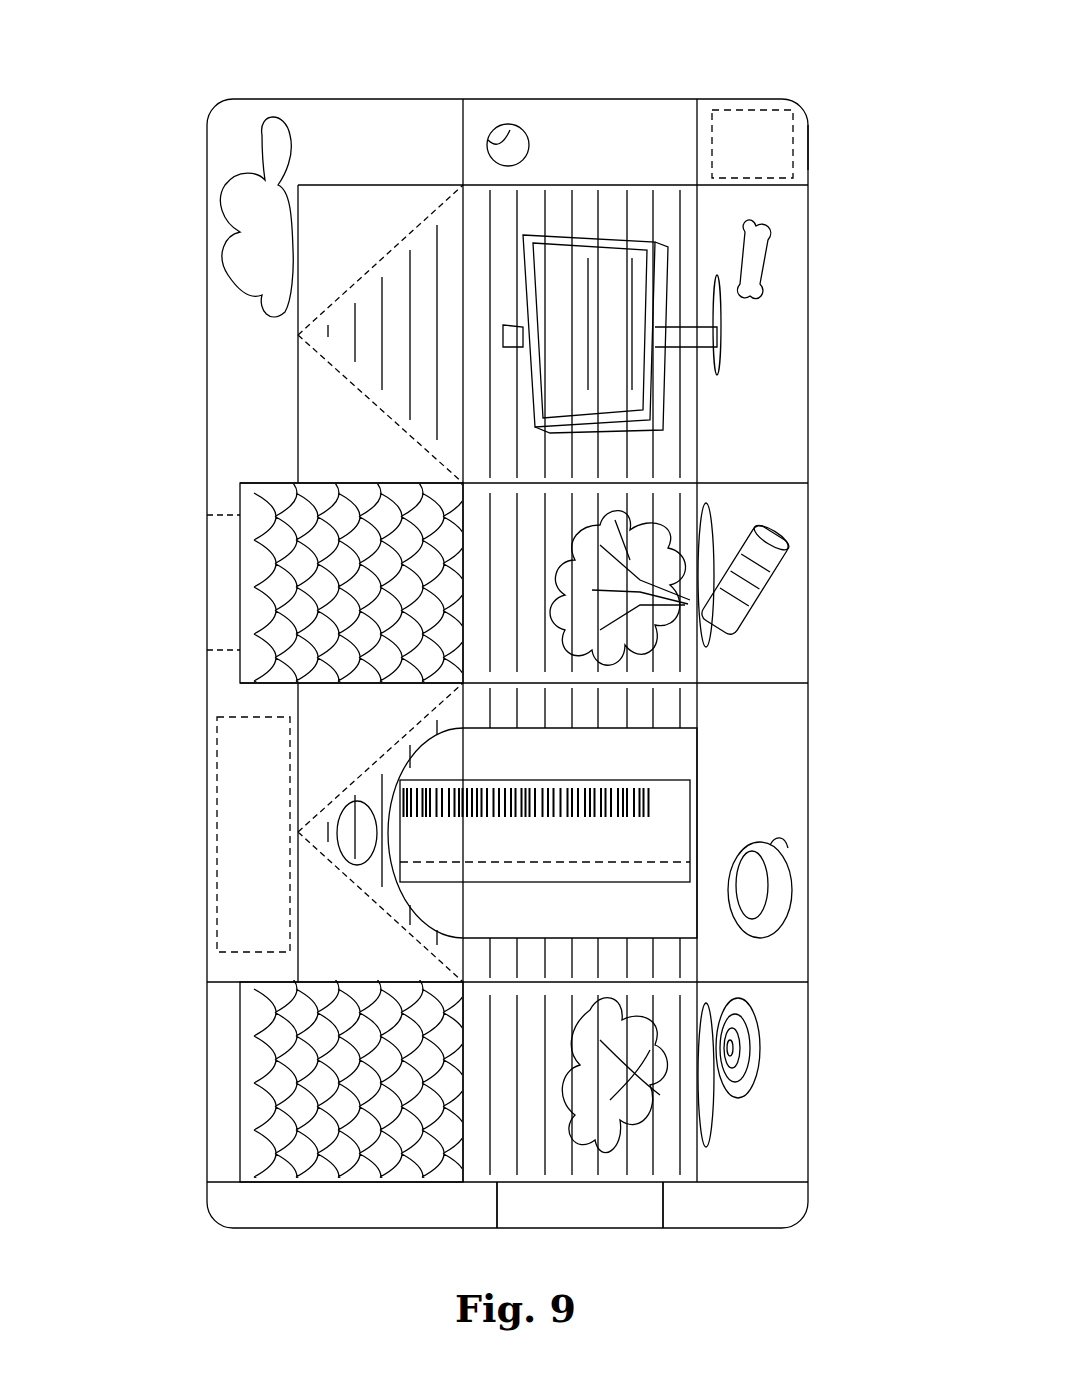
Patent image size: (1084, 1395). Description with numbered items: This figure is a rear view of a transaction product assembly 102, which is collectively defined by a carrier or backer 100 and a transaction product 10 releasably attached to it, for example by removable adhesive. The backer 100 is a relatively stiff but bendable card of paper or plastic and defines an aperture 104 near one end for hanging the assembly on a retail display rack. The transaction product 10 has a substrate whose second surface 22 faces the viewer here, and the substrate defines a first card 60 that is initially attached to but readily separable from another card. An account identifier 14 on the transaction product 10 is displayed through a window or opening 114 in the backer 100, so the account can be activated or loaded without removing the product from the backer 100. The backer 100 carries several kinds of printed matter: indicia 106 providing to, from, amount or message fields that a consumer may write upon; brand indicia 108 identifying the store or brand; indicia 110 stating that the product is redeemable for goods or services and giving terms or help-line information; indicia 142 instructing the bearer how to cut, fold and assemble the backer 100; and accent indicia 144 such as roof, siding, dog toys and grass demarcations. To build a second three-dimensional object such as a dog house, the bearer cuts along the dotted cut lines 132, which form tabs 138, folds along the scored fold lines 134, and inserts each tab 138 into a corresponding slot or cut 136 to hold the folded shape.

The transaction product 10 is at (678, 791).
The account identifier 14 is at (206, 95).
The second surface 22 is at (682, 843).
The first card 60 is at (682, 853).
The backer 100 is at (228, 133).
The transaction product assembly 102 is at (193, 56).
The aperture 104 is at (498, 142).
The indicia 106 is at (238, 260).
The brand indicia 108 is at (357, 866).
The indicia 110 is at (222, 715).
The opening 114 is at (420, 787).
The cut lines 132 is at (698, 110).
The fold lines 134 is at (240, 573).
The cuts 136 is at (575, 185).
The tabs 138 is at (207, 530).
The indicia 142 is at (810, 147).
The accent indicia 144 is at (732, 520).